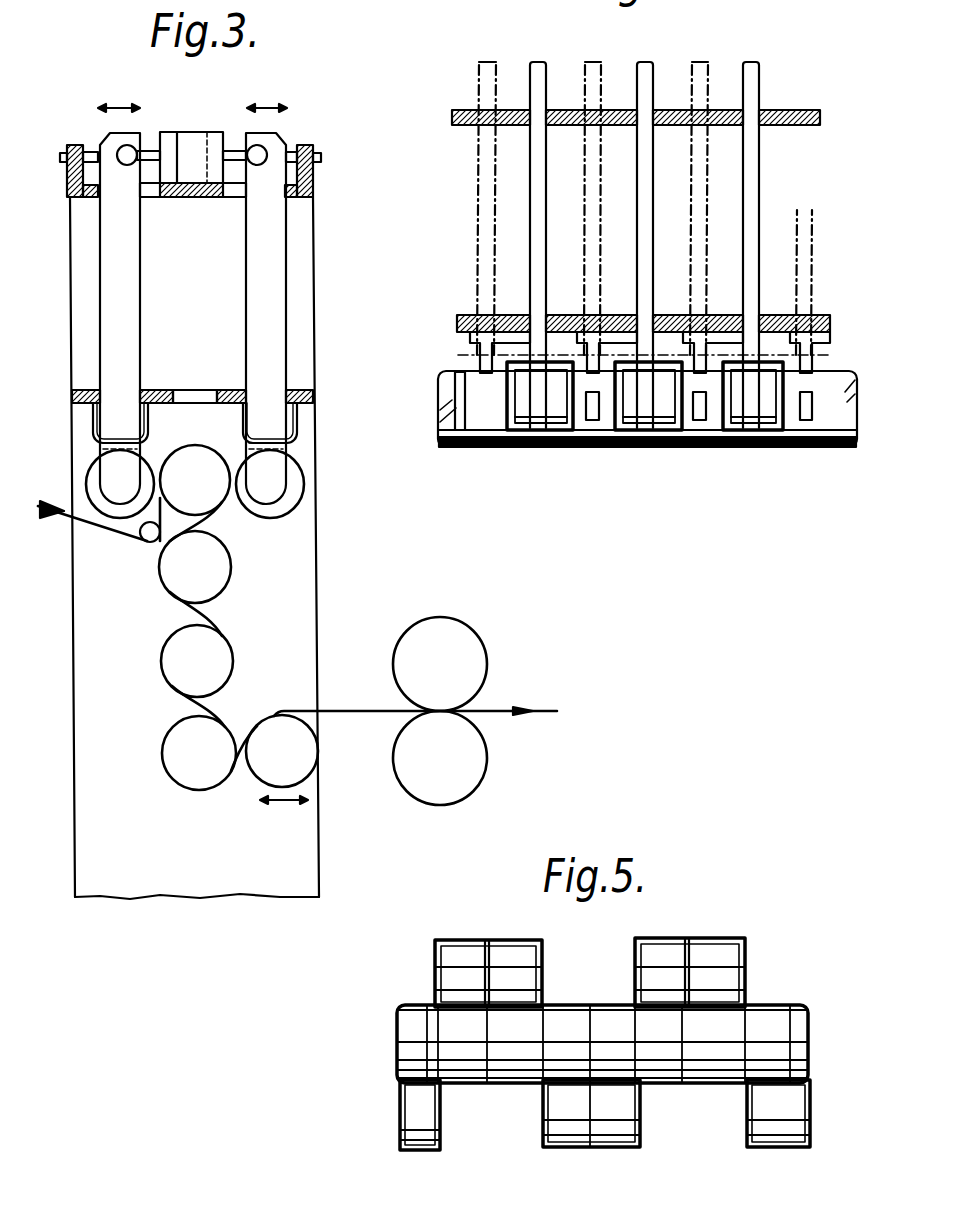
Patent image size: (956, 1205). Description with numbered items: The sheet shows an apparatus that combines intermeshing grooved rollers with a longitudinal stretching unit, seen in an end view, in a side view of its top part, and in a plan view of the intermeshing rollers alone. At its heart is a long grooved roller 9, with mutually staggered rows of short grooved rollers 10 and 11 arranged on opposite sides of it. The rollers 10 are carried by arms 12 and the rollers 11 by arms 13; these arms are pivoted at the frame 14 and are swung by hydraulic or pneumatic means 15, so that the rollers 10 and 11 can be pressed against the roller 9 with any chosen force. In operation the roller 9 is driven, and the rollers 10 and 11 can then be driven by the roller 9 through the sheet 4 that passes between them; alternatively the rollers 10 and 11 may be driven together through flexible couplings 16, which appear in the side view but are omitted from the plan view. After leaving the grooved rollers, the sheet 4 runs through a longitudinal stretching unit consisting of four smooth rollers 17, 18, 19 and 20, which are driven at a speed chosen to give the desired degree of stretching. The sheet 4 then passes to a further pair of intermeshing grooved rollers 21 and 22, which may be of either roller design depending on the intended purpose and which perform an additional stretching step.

In FIG. 3, the sheet 4 is at (82, 523).
In FIG. 3, the long grooved roller 9 is at (207, 457).
In FIG. 4, the long grooved roller 9 is at (827, 440).
In FIG. 5, the long grooved roller 9 is at (400, 1083).
In FIG. 3, the short grooved rollers 10 is at (97, 470).
In FIG. 4, the short grooved rollers 10 is at (550, 448).
In FIG. 5, the short grooved rollers 10 is at (487, 942).
In FIG. 3, the short grooved rollers 11 is at (297, 485).
In FIG. 5, the short grooved rollers 11 is at (543, 1113).
In FIG. 3, the arms 12 is at (108, 282).
In FIG. 4, the arms 12 is at (748, 182).
In FIG. 3, the arms 13 is at (273, 283).
In FIG. 4, the arms 13 is at (702, 67).
In FIG. 3, the frame 14 is at (167, 390).
In FIG. 4, the frame 14 is at (777, 315).
In FIG. 3, the hydraulic or pneumatic means 15 is at (190, 148).
In FIG. 4, the flexible couplings 16 is at (597, 448).
In FIG. 3, the smooth roller 17 is at (223, 577).
In FIG. 3, the smooth roller 18 is at (220, 665).
In FIG. 3, the smooth roller 19 is at (182, 772).
In FIG. 3, the smooth roller 20 is at (300, 772).
In FIG. 3, the intermeshing grooved roller 21 is at (460, 668).
In FIG. 3, the intermeshing grooved roller 22 is at (457, 763).